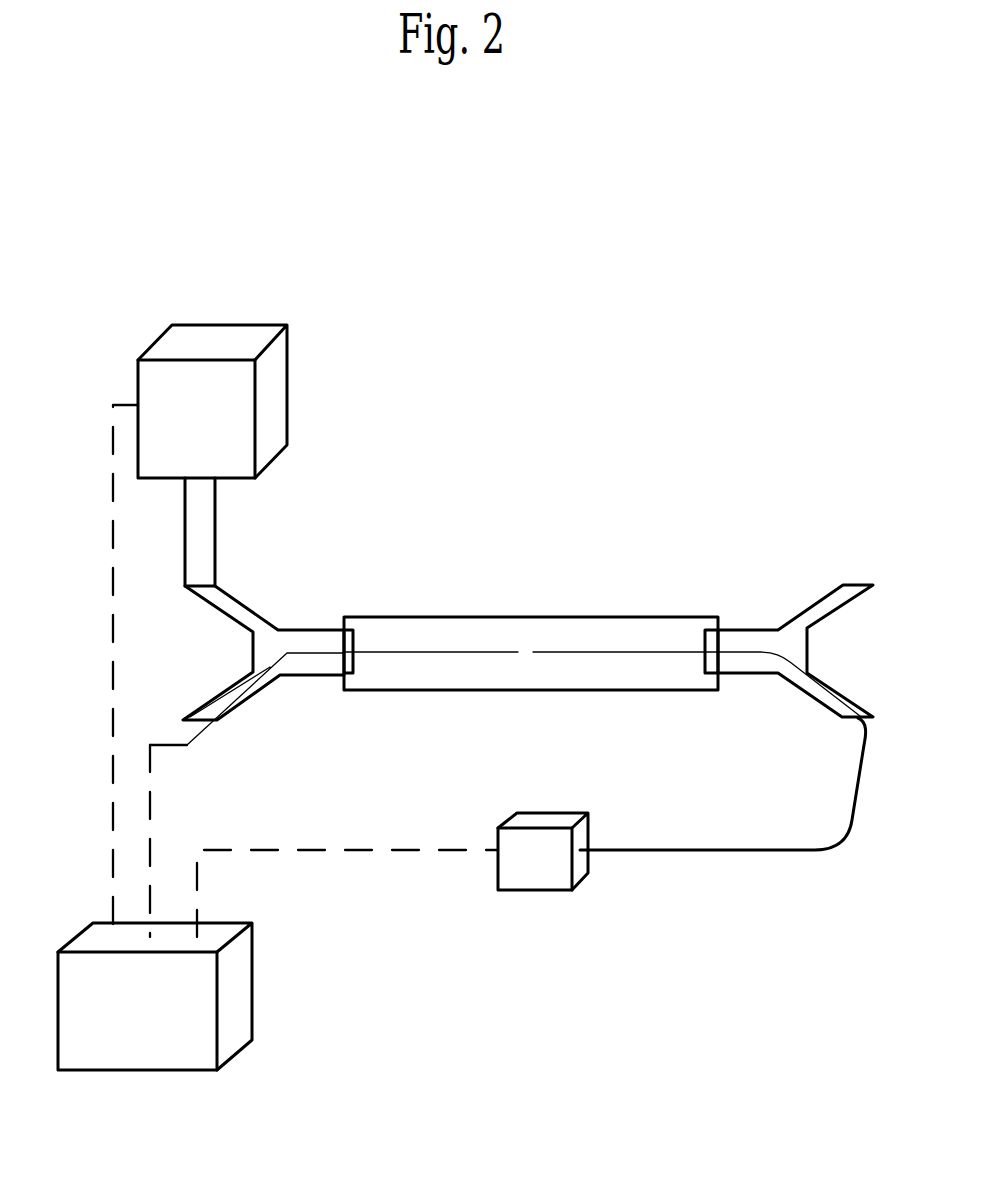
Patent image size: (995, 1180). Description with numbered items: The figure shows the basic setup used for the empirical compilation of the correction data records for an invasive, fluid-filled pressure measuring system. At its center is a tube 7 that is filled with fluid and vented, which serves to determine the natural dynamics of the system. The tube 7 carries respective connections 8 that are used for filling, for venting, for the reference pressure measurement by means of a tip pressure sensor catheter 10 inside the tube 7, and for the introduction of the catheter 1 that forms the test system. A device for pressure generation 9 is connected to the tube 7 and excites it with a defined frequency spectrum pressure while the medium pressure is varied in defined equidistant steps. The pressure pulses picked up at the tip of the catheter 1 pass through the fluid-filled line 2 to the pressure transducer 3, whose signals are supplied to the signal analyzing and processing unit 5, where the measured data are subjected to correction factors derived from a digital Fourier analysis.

The catheter 1 is at (778, 657).
The line 2 is at (802, 855).
The pressure transducer 3 is at (530, 882).
The signal analyzing and processing unit 5 is at (237, 1038).
The tube 7 is at (570, 615).
The connections 8 is at (265, 617).
The device for pressure generation 9 is at (262, 425).
The tip pressure sensor catheter 10 is at (457, 643).